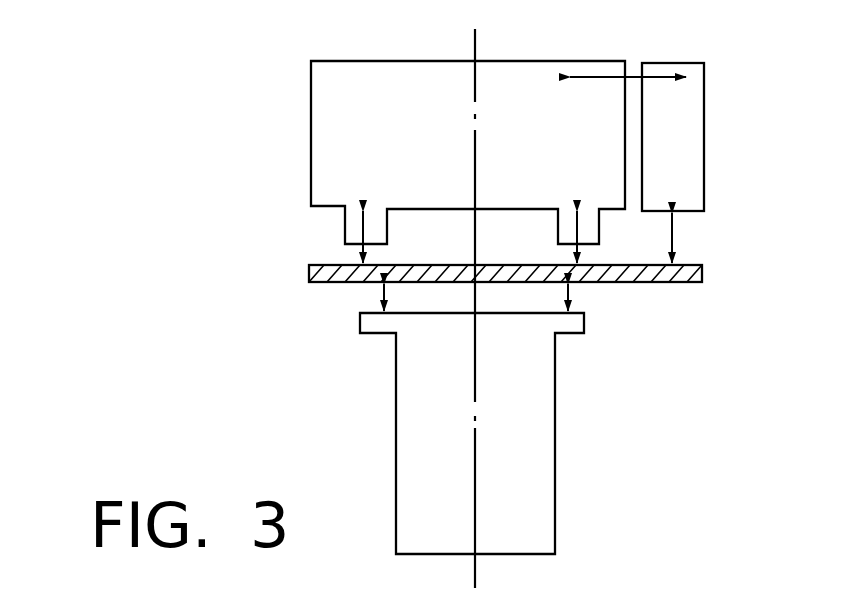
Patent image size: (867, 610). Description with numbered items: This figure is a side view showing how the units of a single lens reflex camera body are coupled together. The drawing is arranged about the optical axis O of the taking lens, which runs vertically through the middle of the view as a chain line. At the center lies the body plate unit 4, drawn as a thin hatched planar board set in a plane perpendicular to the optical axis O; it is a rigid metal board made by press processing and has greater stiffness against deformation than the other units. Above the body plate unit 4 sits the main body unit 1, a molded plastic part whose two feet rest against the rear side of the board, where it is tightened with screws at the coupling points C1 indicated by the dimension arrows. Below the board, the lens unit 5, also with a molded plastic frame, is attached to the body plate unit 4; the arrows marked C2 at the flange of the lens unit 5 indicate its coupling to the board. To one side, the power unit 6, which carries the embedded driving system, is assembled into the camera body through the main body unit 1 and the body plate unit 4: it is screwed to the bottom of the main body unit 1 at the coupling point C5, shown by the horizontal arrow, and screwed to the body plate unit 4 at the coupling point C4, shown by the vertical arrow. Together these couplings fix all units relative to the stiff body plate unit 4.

The main body unit 1 is at (513, 70).
The body plate unit 4 is at (704, 279).
The lens unit 5 is at (542, 401).
The power unit 6 is at (690, 135).
The optical axis O is at (478, 578).
The coupling points C1 is at (358, 250).
The clearance C2 is at (382, 300).
The coupling point C4 is at (674, 238).
The coupling point C5 is at (632, 75).